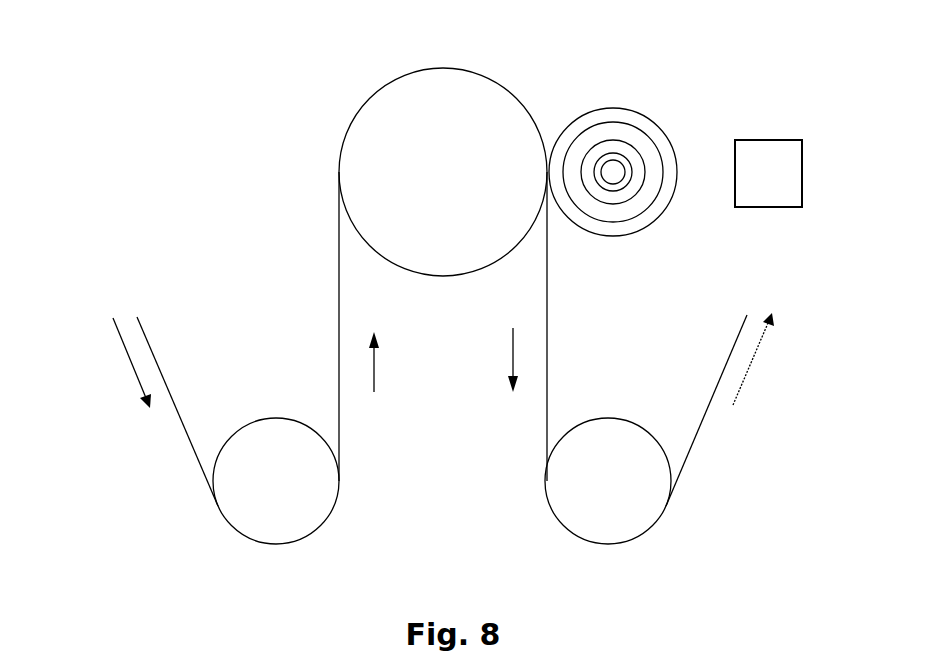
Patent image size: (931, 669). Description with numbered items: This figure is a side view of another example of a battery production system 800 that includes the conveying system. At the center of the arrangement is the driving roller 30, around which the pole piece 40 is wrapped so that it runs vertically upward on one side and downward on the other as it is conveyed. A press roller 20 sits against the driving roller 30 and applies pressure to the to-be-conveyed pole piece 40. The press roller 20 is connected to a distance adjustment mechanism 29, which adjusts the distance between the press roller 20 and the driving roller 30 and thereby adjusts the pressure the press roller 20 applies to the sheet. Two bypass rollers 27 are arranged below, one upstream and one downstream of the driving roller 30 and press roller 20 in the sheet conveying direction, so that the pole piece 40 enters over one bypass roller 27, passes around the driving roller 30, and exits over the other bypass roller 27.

The battery production system 800 is at (92, 69).
The driving roller 30 is at (407, 100).
The press roller 20 is at (592, 118).
The distance adjustment mechanism 29 is at (613, 172).
The pole piece 40 is at (547, 355).
The bypass roller 27 is at (276, 498).